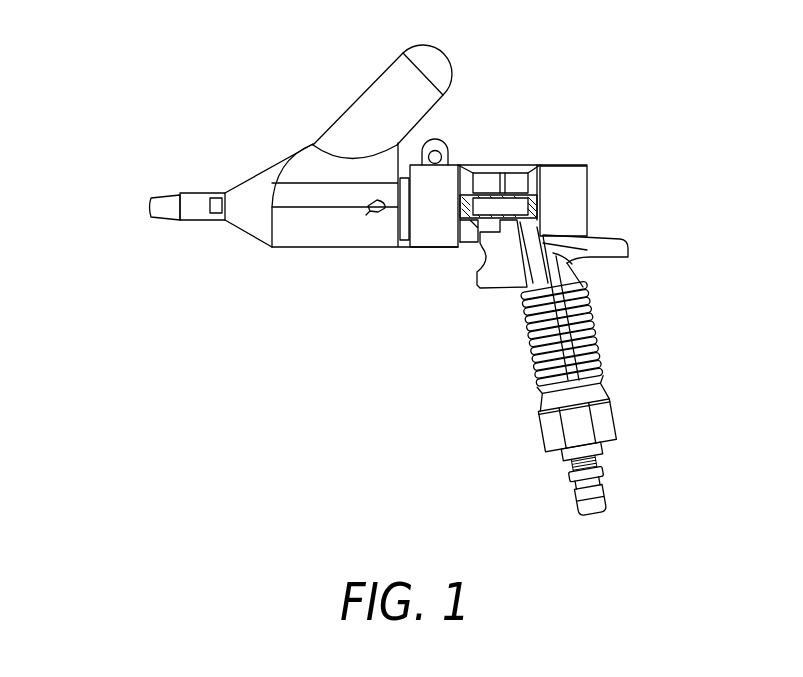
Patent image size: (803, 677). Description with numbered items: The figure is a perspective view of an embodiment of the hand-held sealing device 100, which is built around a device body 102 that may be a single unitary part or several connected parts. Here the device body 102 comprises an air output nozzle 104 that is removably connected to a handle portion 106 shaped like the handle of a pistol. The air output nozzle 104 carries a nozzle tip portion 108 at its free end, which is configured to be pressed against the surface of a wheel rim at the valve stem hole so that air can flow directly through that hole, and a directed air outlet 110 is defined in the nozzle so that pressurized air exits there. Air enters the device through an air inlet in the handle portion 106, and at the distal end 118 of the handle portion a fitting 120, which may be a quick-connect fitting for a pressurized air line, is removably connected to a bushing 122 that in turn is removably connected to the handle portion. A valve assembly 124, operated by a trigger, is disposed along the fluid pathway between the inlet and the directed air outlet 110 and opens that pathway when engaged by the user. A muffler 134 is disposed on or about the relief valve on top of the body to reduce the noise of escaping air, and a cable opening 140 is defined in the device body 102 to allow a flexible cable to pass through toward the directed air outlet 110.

The hand-held sealing device 100 is at (545, 68).
The device body 102 is at (397, 357).
The air output nozzle 104 is at (307, 247).
The handle portion 106 is at (605, 240).
The nozzle tip portion 108 is at (203, 190).
The directed air outlet 110 is at (145, 203).
The distal end of the handle portion 118 is at (534, 433).
The fitting 120 is at (604, 504).
The bushing 122 is at (603, 476).
The valve assembly 124 is at (476, 299).
The muffler 134 is at (369, 91).
The cable opening 140 is at (382, 218).